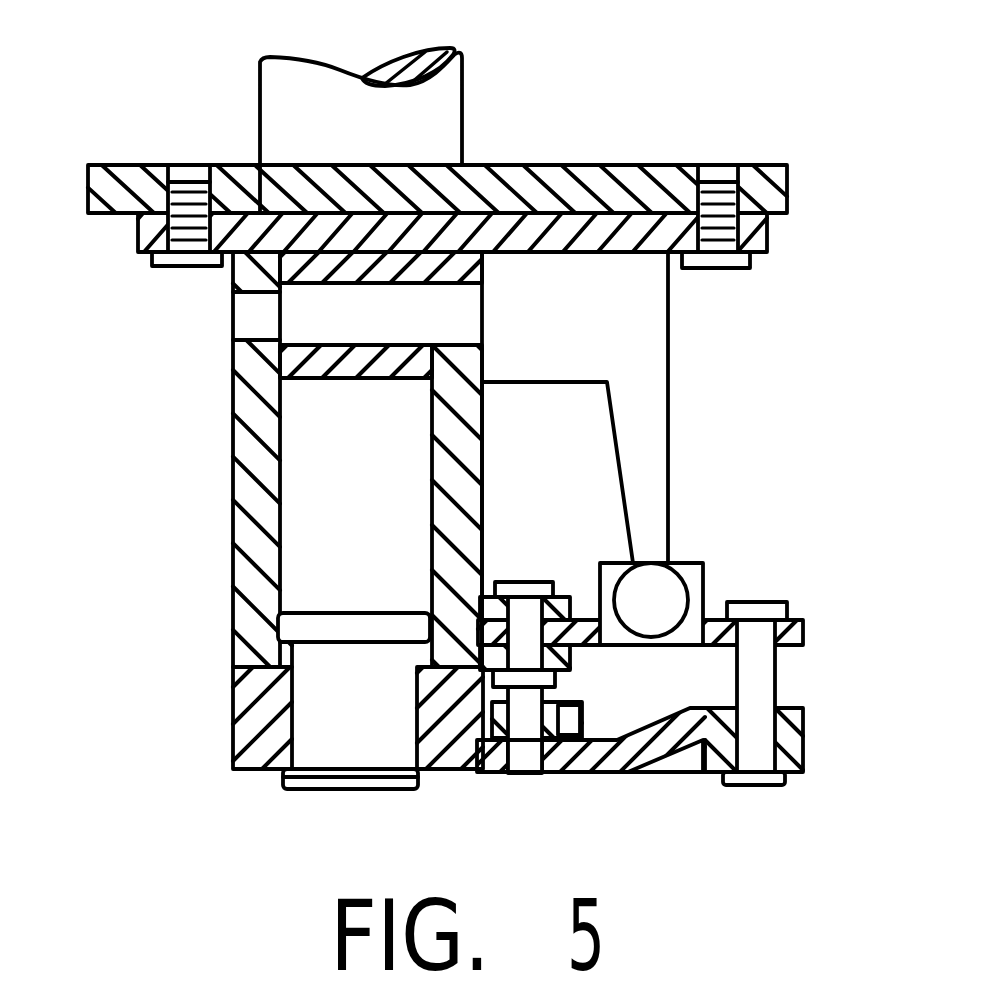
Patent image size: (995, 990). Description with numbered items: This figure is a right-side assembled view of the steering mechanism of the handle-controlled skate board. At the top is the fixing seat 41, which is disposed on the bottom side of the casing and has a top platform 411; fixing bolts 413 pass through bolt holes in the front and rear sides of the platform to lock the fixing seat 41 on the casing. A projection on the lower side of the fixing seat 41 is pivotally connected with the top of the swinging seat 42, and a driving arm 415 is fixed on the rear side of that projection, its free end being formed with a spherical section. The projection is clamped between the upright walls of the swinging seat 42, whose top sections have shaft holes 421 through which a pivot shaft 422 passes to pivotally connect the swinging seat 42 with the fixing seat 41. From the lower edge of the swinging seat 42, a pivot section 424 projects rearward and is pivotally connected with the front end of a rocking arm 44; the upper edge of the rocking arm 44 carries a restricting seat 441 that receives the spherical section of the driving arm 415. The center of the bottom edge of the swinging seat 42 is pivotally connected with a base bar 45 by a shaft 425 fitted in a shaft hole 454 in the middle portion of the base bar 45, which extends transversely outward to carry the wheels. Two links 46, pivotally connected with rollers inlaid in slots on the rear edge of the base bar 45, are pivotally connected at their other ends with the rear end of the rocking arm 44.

The fixing seat 41 is at (138, 244).
The top platform 411 is at (493, 213).
The fixing bolts 413 is at (718, 273).
The driving arm 415 is at (652, 418).
The swinging seat 42 is at (227, 510).
The shaft holes 421 is at (243, 337).
The pivot shaft 422 is at (353, 323).
The pivot section 424 is at (568, 593).
The shaft 425 is at (355, 630).
The rocking arm 44 is at (808, 628).
The restricting seat 441 is at (688, 558).
The base bar 45 is at (238, 710).
The shaft hole 454 is at (290, 706).
The links 46 is at (803, 718).